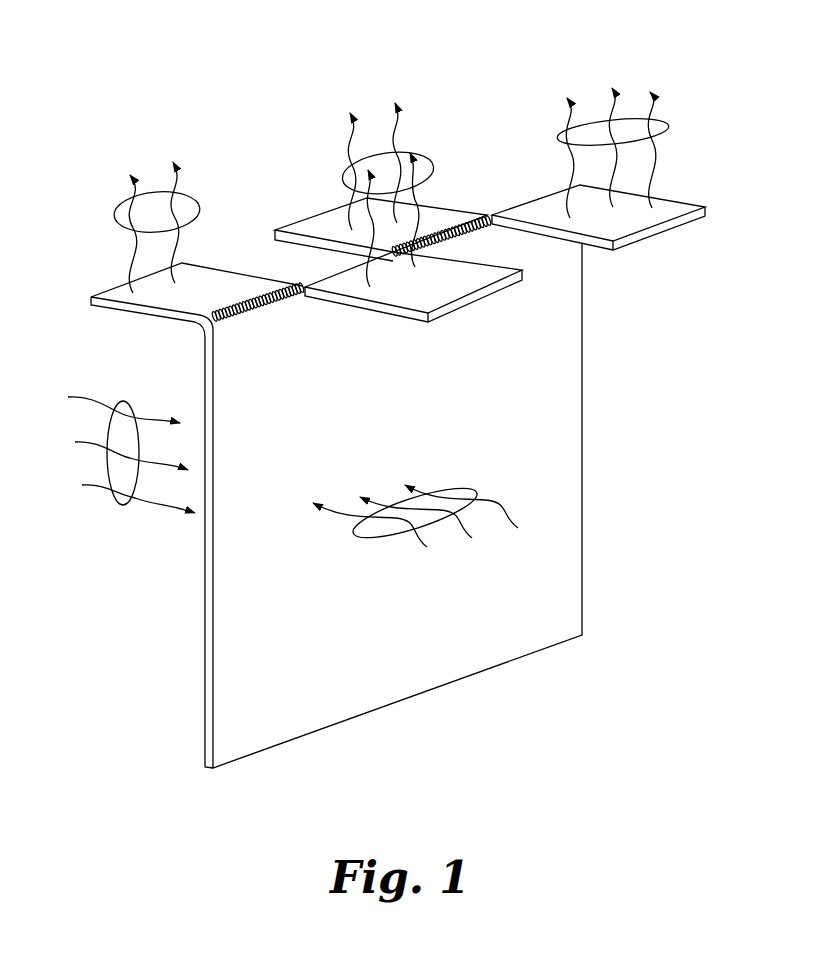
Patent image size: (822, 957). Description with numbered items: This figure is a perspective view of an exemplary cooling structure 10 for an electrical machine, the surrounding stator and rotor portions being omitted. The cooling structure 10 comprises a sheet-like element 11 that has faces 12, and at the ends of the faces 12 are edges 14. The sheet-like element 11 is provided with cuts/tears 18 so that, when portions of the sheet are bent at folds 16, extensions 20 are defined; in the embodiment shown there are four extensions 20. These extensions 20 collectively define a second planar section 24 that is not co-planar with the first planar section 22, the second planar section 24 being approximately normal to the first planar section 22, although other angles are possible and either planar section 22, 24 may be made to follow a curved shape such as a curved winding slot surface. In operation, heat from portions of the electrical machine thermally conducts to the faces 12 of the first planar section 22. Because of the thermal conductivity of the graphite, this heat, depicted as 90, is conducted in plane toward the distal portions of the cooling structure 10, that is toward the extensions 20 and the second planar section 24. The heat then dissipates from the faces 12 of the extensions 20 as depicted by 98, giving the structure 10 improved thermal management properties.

The cooling structure 10 is at (132, 66).
The sheet-like element 11 is at (163, 647).
The faces 12 is at (200, 383).
The edges 14 is at (115, 303).
The folds 16 is at (312, 273).
The cuts/tears 18 is at (289, 243).
The extensions 20 is at (177, 305).
The first planar section 22 is at (183, 730).
The second planar section 24 is at (103, 275).
The heat conducted in plane 90 is at (113, 503).
The heat dissipation 98 is at (197, 200).